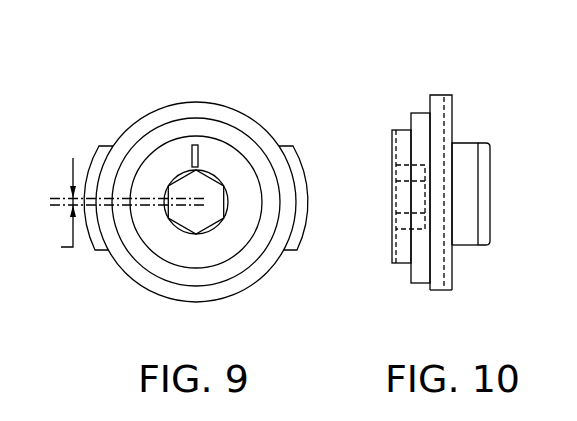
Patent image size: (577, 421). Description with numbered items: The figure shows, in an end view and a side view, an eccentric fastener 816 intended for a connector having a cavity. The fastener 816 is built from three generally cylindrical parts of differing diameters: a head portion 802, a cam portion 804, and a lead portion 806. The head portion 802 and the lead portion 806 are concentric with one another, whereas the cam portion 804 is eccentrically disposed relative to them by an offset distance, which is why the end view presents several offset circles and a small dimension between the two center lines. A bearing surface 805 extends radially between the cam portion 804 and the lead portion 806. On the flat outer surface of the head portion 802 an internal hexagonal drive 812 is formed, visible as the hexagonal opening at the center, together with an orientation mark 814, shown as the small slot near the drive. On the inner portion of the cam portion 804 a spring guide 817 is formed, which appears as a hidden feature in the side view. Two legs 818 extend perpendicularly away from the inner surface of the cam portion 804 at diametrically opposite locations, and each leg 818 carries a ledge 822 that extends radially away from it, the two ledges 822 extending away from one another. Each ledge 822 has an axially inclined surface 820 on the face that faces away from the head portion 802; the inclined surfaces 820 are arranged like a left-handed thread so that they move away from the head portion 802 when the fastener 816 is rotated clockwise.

In FIG. 9, the head portion 802 is at (233, 258).
In FIG. 10, the head portion 802 is at (400, 130).
In FIG. 9, the cam portion 804 is at (163, 103).
In FIG. 10, the cam portion 804 is at (438, 95).
In FIG. 9, the bearing surface 805 is at (147, 123).
In FIG. 10, the bearing surface 805 is at (430, 288).
In FIG. 9, the lead portion 806 is at (120, 249).
In FIG. 10, the lead portion 806 is at (422, 113).
In FIG. 9, the internal hexagonal drive 812 is at (208, 198).
In FIG. 10, the internal hexagonal drive 812 is at (410, 197).
In FIG. 9, the orientation mark 814 is at (198, 152).
In FIG. 9, the fastener 816 is at (268, 104).
In FIG. 10, the fastener 816 is at (462, 96).
In FIG. 10, the spring guide 817 is at (448, 183).
In FIG. 10, the leg 818 is at (462, 238).
In FIG. 9, the axially inclined surface 820 is at (97, 150).
In FIG. 10, the axially inclined surface 820 is at (490, 148).
In FIG. 10, the ledge 822 is at (478, 143).